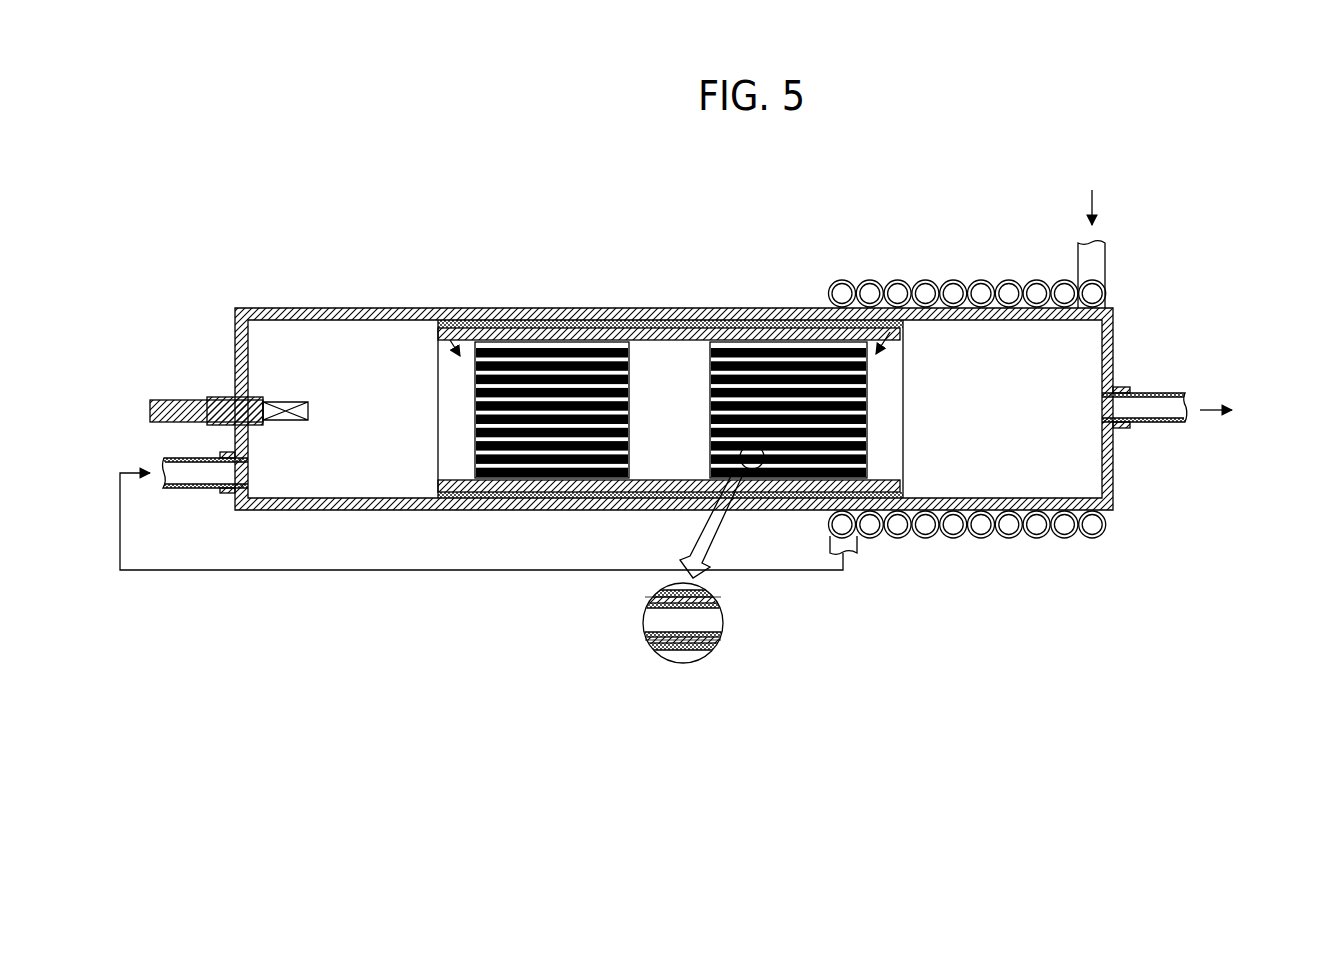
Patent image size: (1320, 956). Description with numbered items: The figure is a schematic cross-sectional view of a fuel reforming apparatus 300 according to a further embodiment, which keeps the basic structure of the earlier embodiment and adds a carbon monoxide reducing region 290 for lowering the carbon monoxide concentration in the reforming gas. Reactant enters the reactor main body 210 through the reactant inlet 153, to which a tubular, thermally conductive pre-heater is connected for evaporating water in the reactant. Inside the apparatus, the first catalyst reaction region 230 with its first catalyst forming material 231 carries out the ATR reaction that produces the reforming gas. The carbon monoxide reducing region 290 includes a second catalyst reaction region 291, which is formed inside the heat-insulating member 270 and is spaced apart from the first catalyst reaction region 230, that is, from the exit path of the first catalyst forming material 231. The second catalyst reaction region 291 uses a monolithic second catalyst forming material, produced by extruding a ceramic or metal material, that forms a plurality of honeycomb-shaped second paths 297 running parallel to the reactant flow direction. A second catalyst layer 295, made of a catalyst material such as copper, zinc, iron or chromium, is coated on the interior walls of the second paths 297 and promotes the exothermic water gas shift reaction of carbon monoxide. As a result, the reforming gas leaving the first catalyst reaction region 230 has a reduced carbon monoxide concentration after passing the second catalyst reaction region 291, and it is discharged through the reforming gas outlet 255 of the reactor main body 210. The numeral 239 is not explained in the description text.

The fuel reforming apparatus 300 is at (685, 230).
The reactor main body 210 is at (776, 306).
The first catalyst reaction region 230 is at (443, 306).
The first catalyst forming material 231 is at (517, 308).
The heat-insulating member 270 is at (673, 468).
The carbon monoxide reducing region 290 is at (918, 295).
The second catalyst reaction region 291 is at (712, 308).
The reforming gas outlet 255 is at (1128, 441).
The reactant inlet 153 is at (228, 494).
The second paths 297 is at (653, 621).
The upper wall layer 239 is at (713, 597).
The second catalyst layer 295 is at (720, 640).